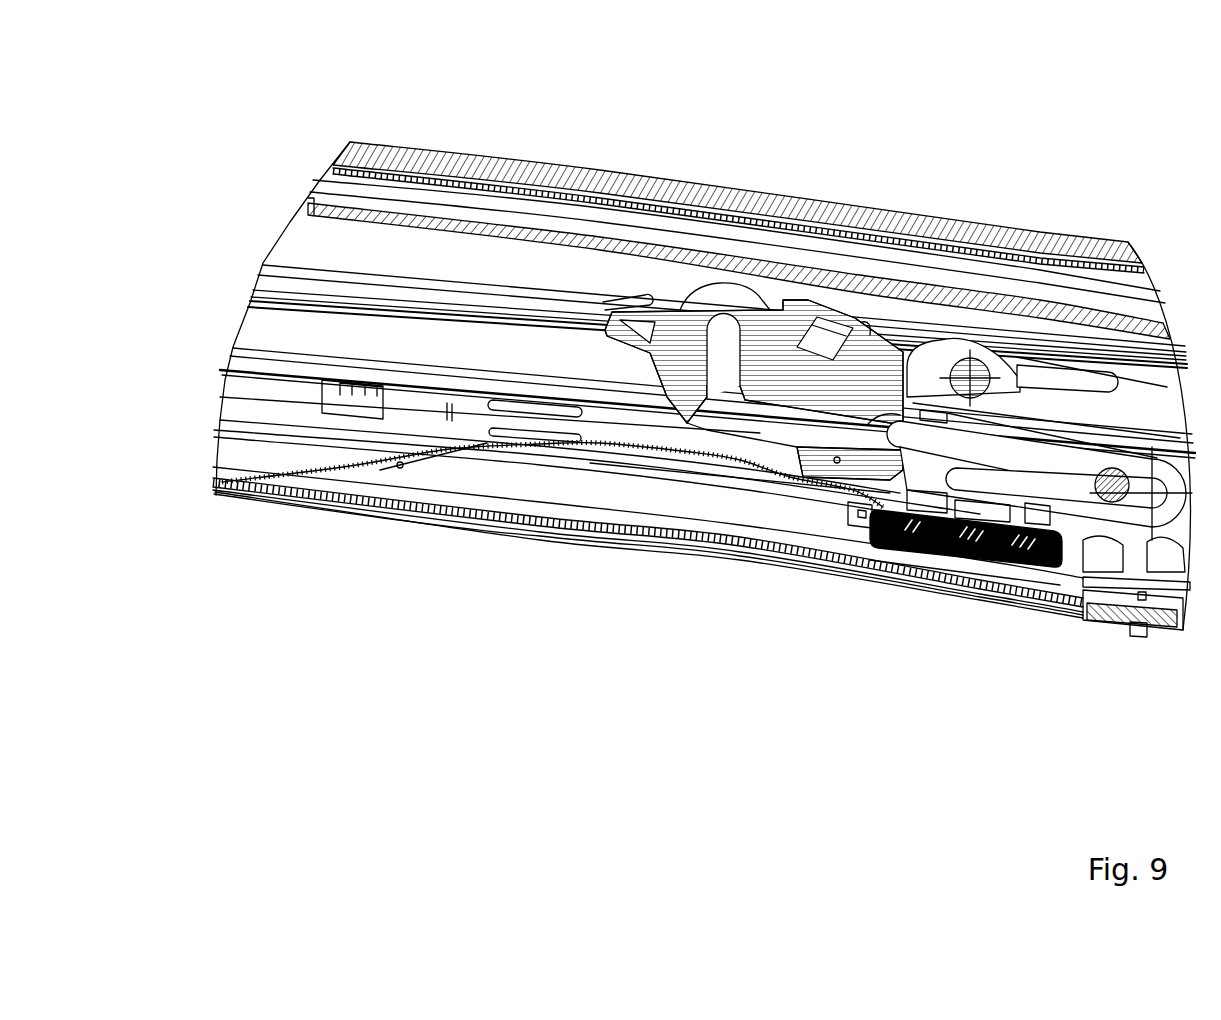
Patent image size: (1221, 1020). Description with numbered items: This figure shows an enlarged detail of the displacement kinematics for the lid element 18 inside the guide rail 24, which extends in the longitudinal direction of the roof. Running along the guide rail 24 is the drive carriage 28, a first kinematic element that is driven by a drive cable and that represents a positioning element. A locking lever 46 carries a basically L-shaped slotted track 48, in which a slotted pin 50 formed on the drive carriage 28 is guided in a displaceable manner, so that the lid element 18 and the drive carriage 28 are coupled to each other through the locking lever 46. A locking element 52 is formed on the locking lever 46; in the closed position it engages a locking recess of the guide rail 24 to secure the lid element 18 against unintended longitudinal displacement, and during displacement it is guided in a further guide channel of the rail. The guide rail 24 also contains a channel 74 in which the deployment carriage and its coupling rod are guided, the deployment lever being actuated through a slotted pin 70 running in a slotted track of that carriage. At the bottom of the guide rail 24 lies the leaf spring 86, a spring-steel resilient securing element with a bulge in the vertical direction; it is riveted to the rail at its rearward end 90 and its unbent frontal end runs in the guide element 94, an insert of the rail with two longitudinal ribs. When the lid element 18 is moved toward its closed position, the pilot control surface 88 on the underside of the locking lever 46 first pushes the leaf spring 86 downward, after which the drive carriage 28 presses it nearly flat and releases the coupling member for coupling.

The lid element 18 is at (535, 158).
The channel 74 is at (290, 377).
The slotted pin 70 is at (248, 390).
The rearward end 90 is at (268, 490).
The guide rail 24 is at (377, 500).
The leaf spring 86 is at (587, 443).
The slotted track 48 is at (748, 397).
The locking element 52 is at (820, 345).
The locking lever 46 is at (870, 365).
The slotted pin 50 is at (1102, 495).
The drive carriage 28 is at (922, 562).
The pilot control surface 88 is at (852, 488).
The guide element 94 is at (1132, 610).